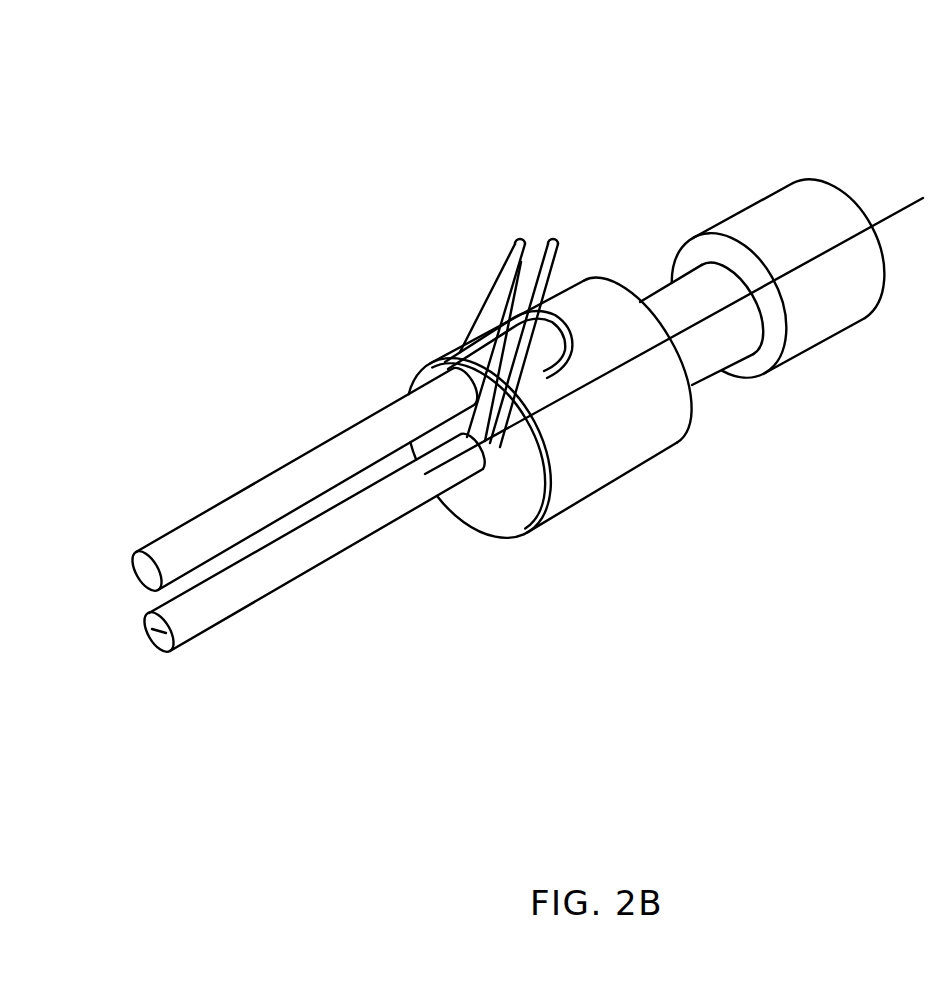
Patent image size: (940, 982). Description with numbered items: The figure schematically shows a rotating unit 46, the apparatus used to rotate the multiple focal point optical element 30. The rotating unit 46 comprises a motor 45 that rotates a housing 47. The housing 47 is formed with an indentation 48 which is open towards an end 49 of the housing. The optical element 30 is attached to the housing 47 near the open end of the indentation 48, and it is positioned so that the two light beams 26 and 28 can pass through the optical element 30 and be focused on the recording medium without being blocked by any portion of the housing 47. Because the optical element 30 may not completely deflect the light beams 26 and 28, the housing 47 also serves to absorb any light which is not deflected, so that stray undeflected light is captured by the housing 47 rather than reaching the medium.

The light beam 26 is at (330, 456).
The light beam 28 is at (365, 523).
The optical element 30 is at (516, 498).
The motor 45 is at (856, 306).
The rotating unit 46 is at (654, 327).
The housing 47 is at (593, 451).
The indentation 48 is at (533, 362).
The end 49 is at (443, 360).